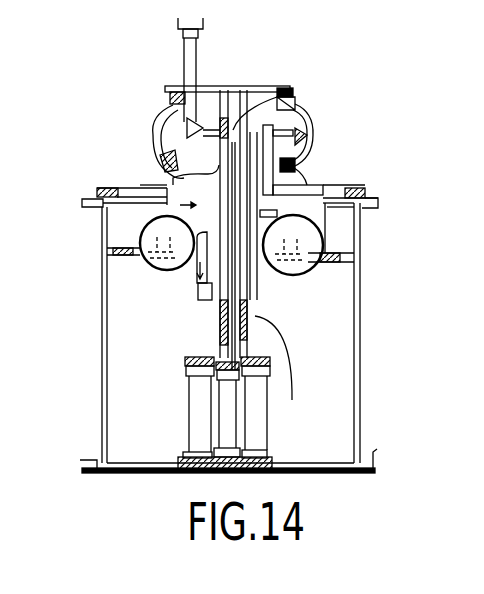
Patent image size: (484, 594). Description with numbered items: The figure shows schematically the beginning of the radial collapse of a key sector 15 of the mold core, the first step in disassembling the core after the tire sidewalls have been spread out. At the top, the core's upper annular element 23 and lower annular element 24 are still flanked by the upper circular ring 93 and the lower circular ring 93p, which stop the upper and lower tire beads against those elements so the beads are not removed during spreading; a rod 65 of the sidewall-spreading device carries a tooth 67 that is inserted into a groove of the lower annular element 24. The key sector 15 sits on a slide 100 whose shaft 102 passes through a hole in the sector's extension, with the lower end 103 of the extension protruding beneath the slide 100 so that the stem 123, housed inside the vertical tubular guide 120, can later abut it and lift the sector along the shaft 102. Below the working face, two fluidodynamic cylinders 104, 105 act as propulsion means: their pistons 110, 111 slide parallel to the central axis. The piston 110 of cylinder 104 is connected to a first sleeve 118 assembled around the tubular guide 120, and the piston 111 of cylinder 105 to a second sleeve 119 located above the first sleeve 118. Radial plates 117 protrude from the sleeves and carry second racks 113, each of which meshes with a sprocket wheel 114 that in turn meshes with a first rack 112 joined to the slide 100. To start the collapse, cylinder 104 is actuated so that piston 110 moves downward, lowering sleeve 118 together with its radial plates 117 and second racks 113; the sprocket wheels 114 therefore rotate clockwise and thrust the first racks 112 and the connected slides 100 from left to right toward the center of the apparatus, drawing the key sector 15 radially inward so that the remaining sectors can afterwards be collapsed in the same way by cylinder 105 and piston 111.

The rod 65 is at (184, 52).
The key sector 15 is at (216, 90).
The shaft 102 is at (253, 87).
The lower end of extension 103 is at (277, 90).
The circular ring 93 is at (295, 100).
The upper annular element 23 is at (295, 104).
The lower annular element 24 is at (307, 150).
The circular ring 93p is at (305, 168).
The tooth 67 is at (165, 112).
The stem 123 is at (160, 155).
The slide 100 is at (152, 176).
The first rack 112 is at (100, 203).
The second rack 113 is at (190, 288).
The sprocket wheel 114 is at (140, 258).
The second sleeve 119 is at (313, 257).
The vertical tubular guide 120 is at (320, 310).
The radial plate 117 is at (192, 322).
The piston 110 is at (187, 350).
The first sleeve 118 is at (237, 290).
The piston 111 is at (292, 385).
The fluidodynamic cylinder 104 is at (197, 413).
The fluidodynamic cylinder 105 is at (248, 413).